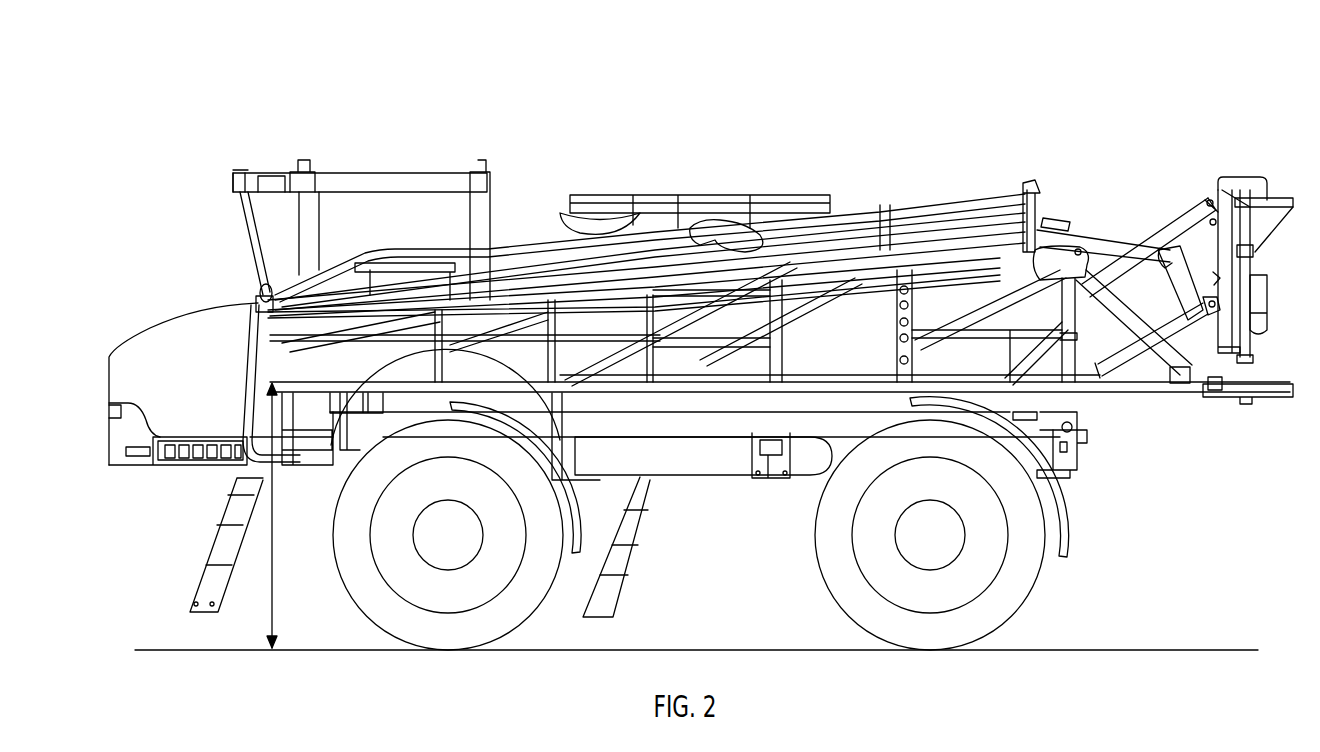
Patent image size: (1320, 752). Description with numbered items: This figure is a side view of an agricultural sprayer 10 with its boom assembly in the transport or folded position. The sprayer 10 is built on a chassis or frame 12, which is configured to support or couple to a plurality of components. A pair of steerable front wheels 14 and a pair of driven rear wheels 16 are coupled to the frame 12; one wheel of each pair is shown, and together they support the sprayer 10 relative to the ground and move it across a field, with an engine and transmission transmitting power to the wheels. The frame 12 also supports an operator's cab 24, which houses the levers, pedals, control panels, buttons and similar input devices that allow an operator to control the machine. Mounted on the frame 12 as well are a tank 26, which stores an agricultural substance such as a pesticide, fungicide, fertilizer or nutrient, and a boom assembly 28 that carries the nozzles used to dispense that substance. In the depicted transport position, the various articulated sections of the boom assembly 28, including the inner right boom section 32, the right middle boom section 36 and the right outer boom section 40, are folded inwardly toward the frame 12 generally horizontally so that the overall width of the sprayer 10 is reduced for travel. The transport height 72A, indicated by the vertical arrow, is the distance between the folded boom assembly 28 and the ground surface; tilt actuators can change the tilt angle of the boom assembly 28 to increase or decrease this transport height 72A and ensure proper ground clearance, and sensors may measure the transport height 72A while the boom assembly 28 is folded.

The agricultural sprayer 10 is at (1080, 127).
The frame 12 is at (701, 461).
The front wheels 14 is at (525, 598).
The rear wheels 16 is at (1003, 605).
The operator's cab 24 is at (377, 170).
The tank 26 is at (597, 225).
The boom assembly 28 is at (910, 170).
The inner right boom section 32 is at (868, 190).
The right middle boom section 36 is at (646, 252).
The right outer boom section 40 is at (719, 249).
The transport height 72A is at (272, 598).